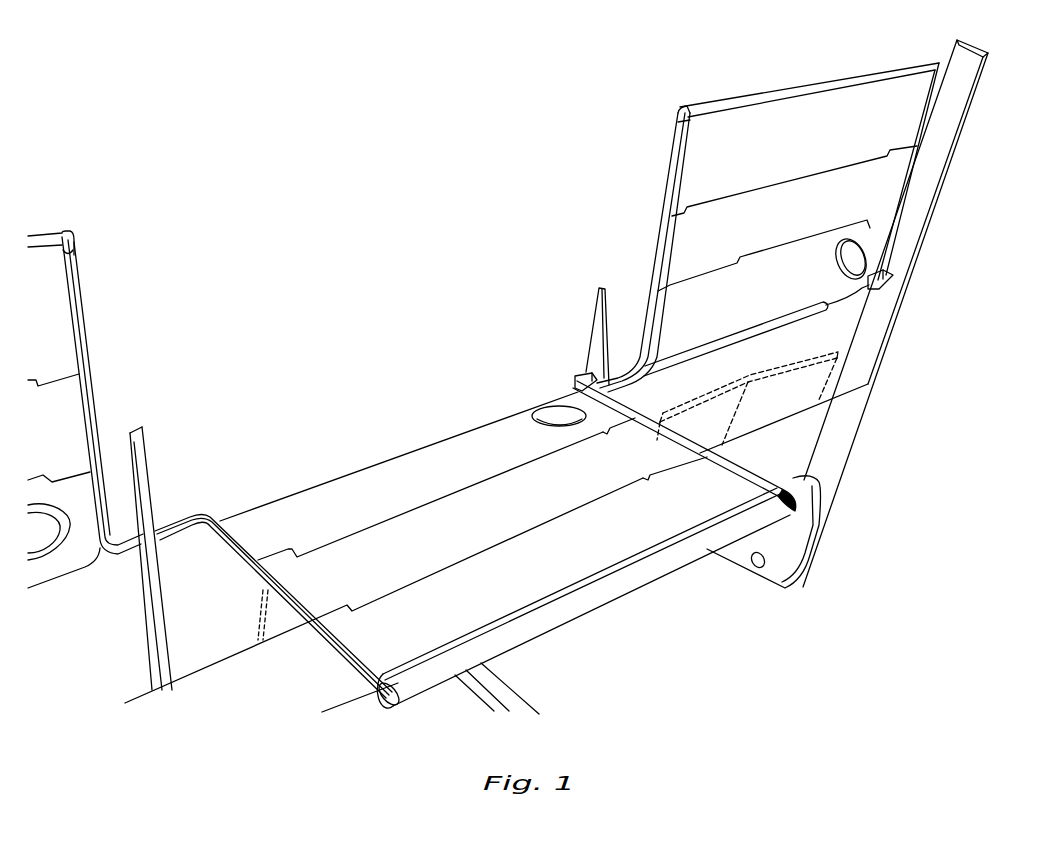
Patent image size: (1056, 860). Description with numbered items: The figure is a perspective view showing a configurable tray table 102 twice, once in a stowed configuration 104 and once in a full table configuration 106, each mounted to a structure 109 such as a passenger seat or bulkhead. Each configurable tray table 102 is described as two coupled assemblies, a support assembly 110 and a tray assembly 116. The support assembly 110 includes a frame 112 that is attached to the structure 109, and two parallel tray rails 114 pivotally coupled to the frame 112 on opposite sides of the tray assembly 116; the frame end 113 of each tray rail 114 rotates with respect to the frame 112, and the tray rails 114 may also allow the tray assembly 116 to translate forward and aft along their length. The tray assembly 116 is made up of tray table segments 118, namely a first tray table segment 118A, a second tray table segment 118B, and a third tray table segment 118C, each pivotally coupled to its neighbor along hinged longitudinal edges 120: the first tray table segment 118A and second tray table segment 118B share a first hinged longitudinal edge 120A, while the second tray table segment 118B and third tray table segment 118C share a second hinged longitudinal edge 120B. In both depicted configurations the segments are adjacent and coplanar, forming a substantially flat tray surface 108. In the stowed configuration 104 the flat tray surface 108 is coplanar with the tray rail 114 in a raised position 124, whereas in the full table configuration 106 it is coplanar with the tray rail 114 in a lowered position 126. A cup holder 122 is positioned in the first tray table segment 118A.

The configurable tray table 102 is at (340, 245).
The stowed configuration 104 is at (843, 310).
The full table configuration 106 is at (607, 617).
The substantially flat tray surface 108 is at (467, 433).
The structure 109 is at (120, 640).
The support assembly 110 is at (218, 394).
The frame 112 is at (151, 478).
The frame end 113 is at (585, 368).
The tray rail 114 is at (218, 516).
The tray assembly 116 is at (490, 605).
The tray table segments 118 is at (797, 279).
The first tray table segment 118A is at (427, 493).
The second tray table segment 118B is at (467, 540).
The third tray table segment 118C is at (505, 597).
The tabs 120 is at (612, 481).
The first hinged longitudinal edge 120A is at (527, 467).
The second hinged longitudinal edge 120B is at (568, 515).
The cup holder 122 is at (557, 412).
The raised position 124 is at (655, 209).
The lowered position 126 is at (333, 658).